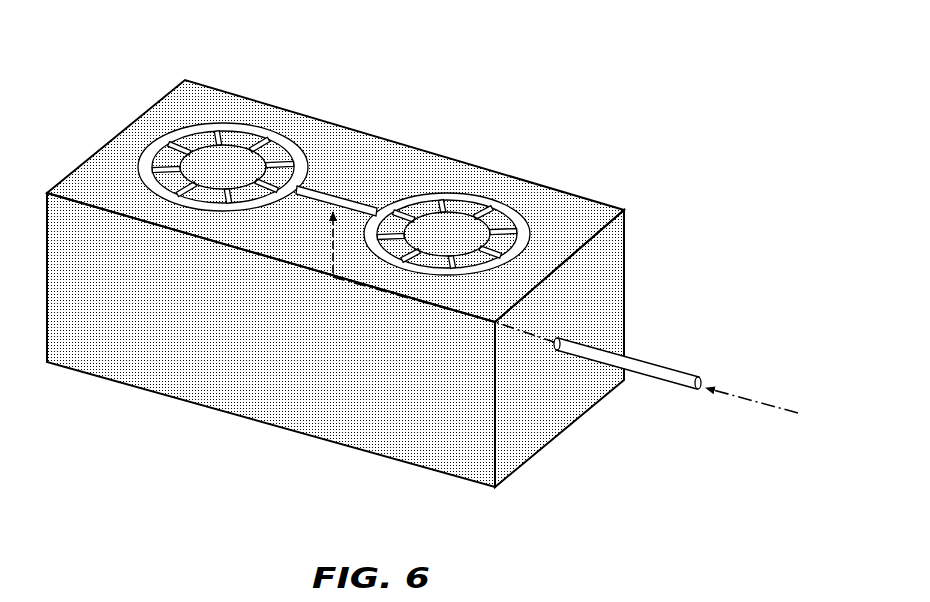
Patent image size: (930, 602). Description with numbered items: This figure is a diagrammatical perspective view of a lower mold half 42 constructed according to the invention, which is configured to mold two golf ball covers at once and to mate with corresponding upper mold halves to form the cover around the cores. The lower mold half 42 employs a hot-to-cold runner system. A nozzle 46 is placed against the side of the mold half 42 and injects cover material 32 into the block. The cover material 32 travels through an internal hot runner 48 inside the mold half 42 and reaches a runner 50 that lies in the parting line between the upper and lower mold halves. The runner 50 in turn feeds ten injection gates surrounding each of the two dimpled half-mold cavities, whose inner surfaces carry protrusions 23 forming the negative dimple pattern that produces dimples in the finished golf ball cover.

The protrusions 23 is at (451, 236).
The cover material 32 is at (762, 406).
The lower mold half 42 is at (186, 372).
The nozzle 46 is at (670, 371).
The hot runner 48 is at (405, 302).
The runner 50 is at (326, 196).